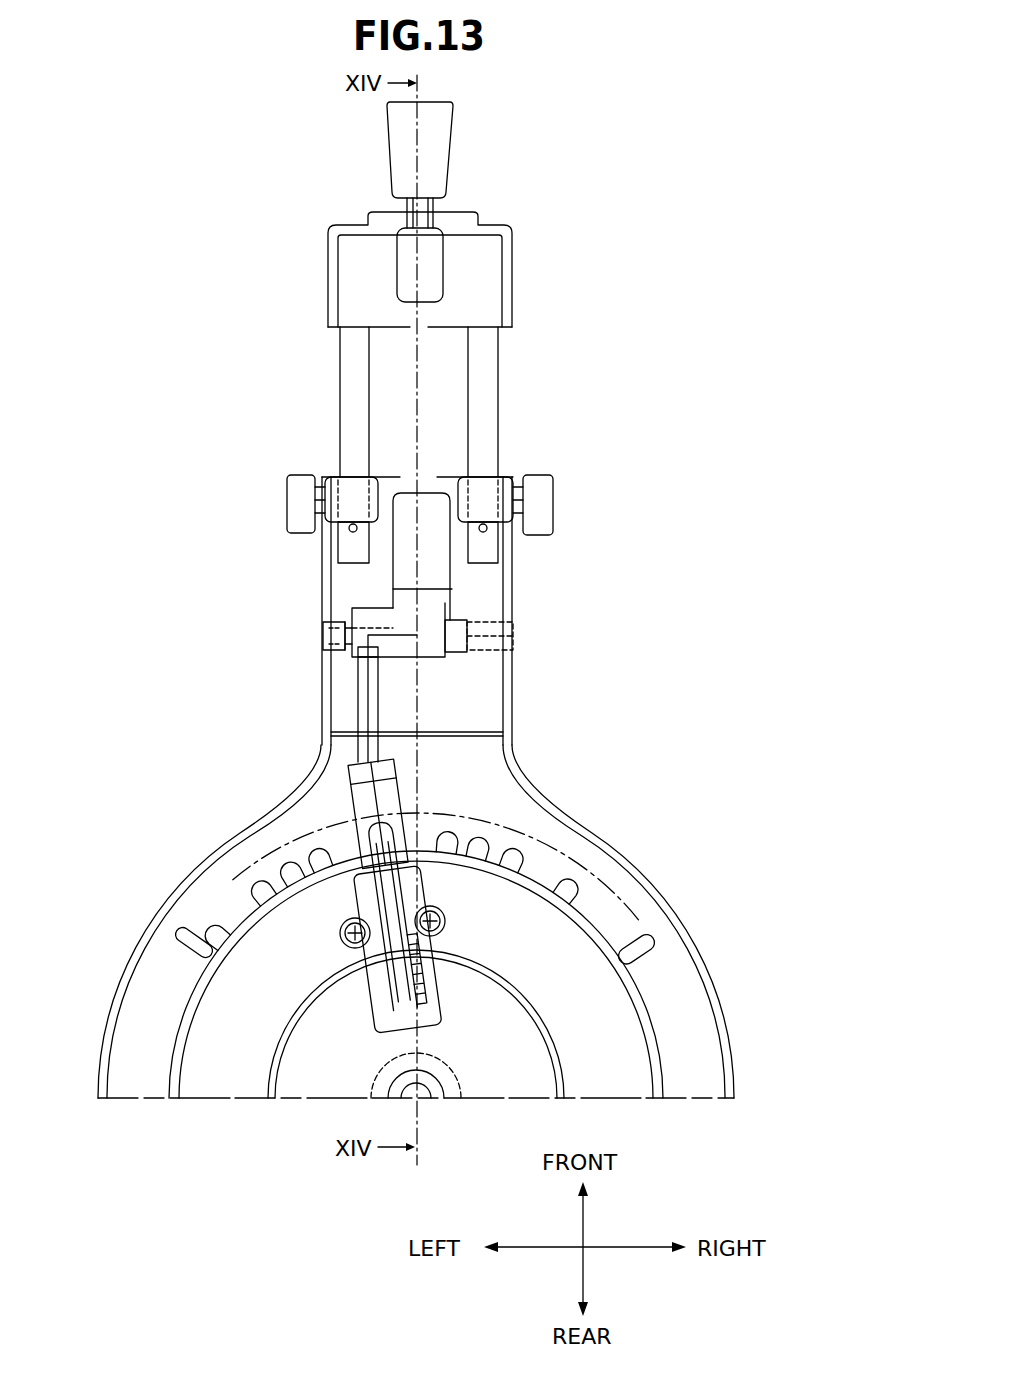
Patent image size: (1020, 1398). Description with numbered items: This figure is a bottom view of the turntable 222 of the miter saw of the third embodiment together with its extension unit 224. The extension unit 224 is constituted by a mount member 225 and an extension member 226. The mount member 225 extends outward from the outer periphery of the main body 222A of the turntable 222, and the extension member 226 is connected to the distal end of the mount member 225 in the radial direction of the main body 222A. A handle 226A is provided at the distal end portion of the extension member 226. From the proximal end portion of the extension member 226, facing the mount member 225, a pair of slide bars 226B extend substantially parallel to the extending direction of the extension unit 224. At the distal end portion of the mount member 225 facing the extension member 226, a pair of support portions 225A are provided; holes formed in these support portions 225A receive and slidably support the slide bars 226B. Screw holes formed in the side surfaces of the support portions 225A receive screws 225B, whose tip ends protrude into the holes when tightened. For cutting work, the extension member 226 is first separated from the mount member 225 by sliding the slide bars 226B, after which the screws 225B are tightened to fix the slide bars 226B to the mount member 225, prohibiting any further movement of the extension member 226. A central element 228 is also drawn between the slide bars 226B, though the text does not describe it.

The handle 226A is at (440, 148).
The extension member 226 is at (487, 277).
The slide bars 226B is at (350, 397).
The support portions 225A is at (353, 482).
The screws 225B is at (297, 503).
The extension unit 224 is at (513, 553).
The slider member 228 is at (432, 602).
The mount member 225 is at (465, 676).
The main body 222A is at (600, 838).
The turntable 222 is at (710, 955).